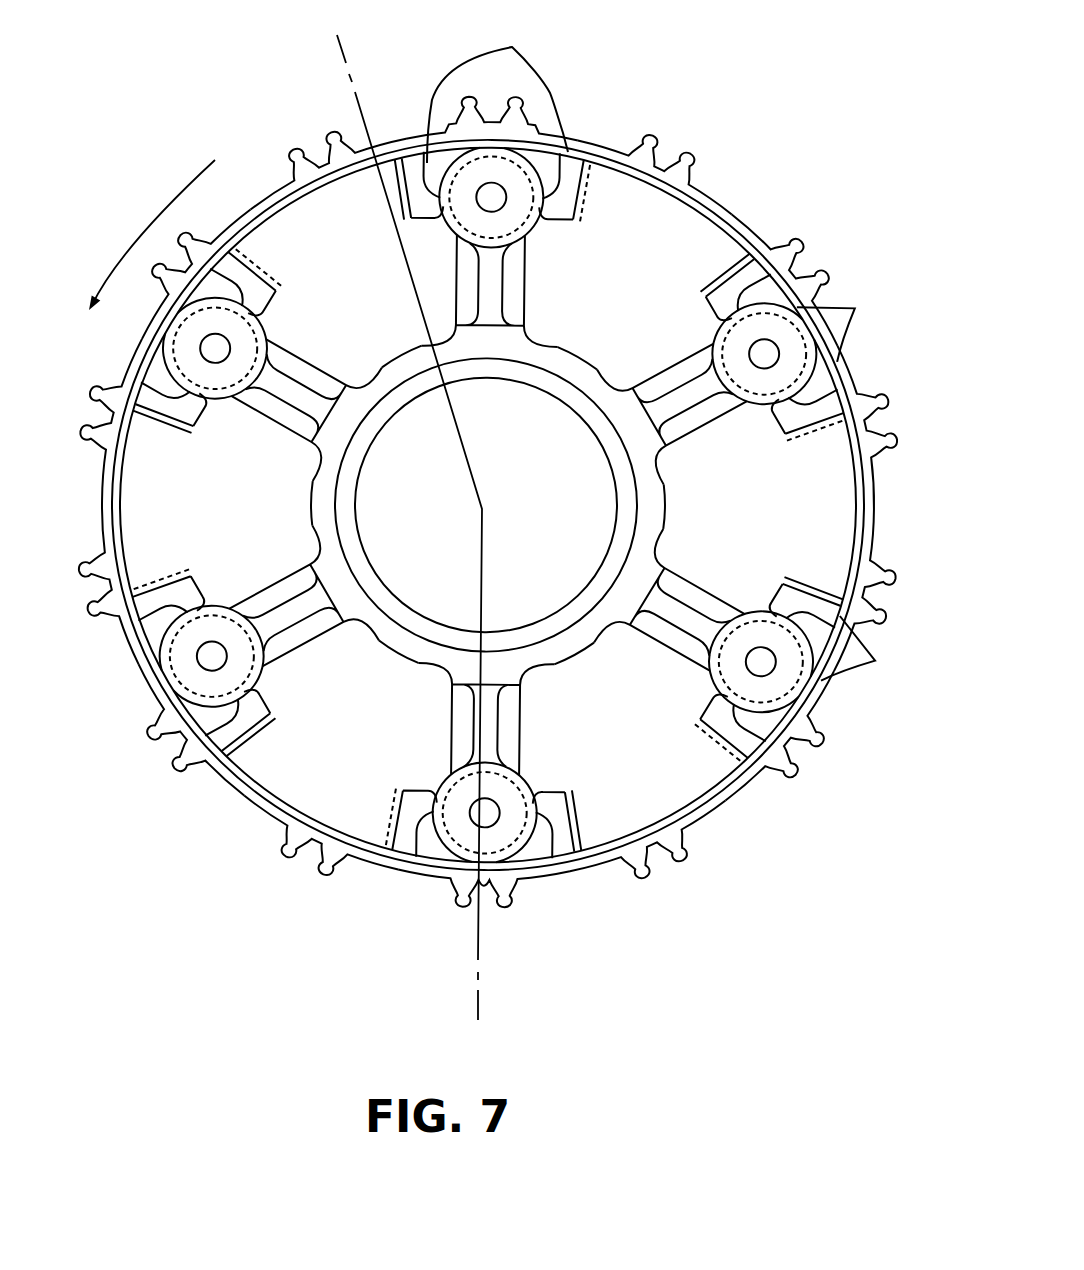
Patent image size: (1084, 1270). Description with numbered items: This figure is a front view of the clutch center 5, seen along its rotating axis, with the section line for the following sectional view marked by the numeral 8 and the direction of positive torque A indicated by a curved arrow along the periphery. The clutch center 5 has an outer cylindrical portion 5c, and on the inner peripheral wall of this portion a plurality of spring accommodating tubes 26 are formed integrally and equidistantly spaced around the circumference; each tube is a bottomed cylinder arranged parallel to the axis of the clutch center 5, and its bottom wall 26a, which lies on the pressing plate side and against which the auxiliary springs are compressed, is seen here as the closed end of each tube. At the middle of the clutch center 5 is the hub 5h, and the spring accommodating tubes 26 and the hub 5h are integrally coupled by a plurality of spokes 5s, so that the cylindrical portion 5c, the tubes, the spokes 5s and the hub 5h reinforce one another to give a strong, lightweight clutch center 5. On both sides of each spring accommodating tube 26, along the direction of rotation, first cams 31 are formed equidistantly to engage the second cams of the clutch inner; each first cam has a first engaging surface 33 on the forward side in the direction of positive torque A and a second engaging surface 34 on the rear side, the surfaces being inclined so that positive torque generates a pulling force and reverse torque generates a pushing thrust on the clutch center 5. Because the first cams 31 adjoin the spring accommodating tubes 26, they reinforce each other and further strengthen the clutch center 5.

The clutch center 5 is at (622, 108).
The cylindrical portion 5c is at (731, 208).
The hub 5h is at (552, 386).
The spokes 5s is at (530, 284).
The spring accommodating tubes 26 is at (541, 224).
The bottom wall 26a is at (467, 216).
The first cams 31 is at (513, 56).
The first engaging surfaces 33 is at (398, 186).
The second engaging surfaces 34 is at (598, 190).
The section line 8- 8 is at (330, 55).
The positive torque A is at (152, 234).